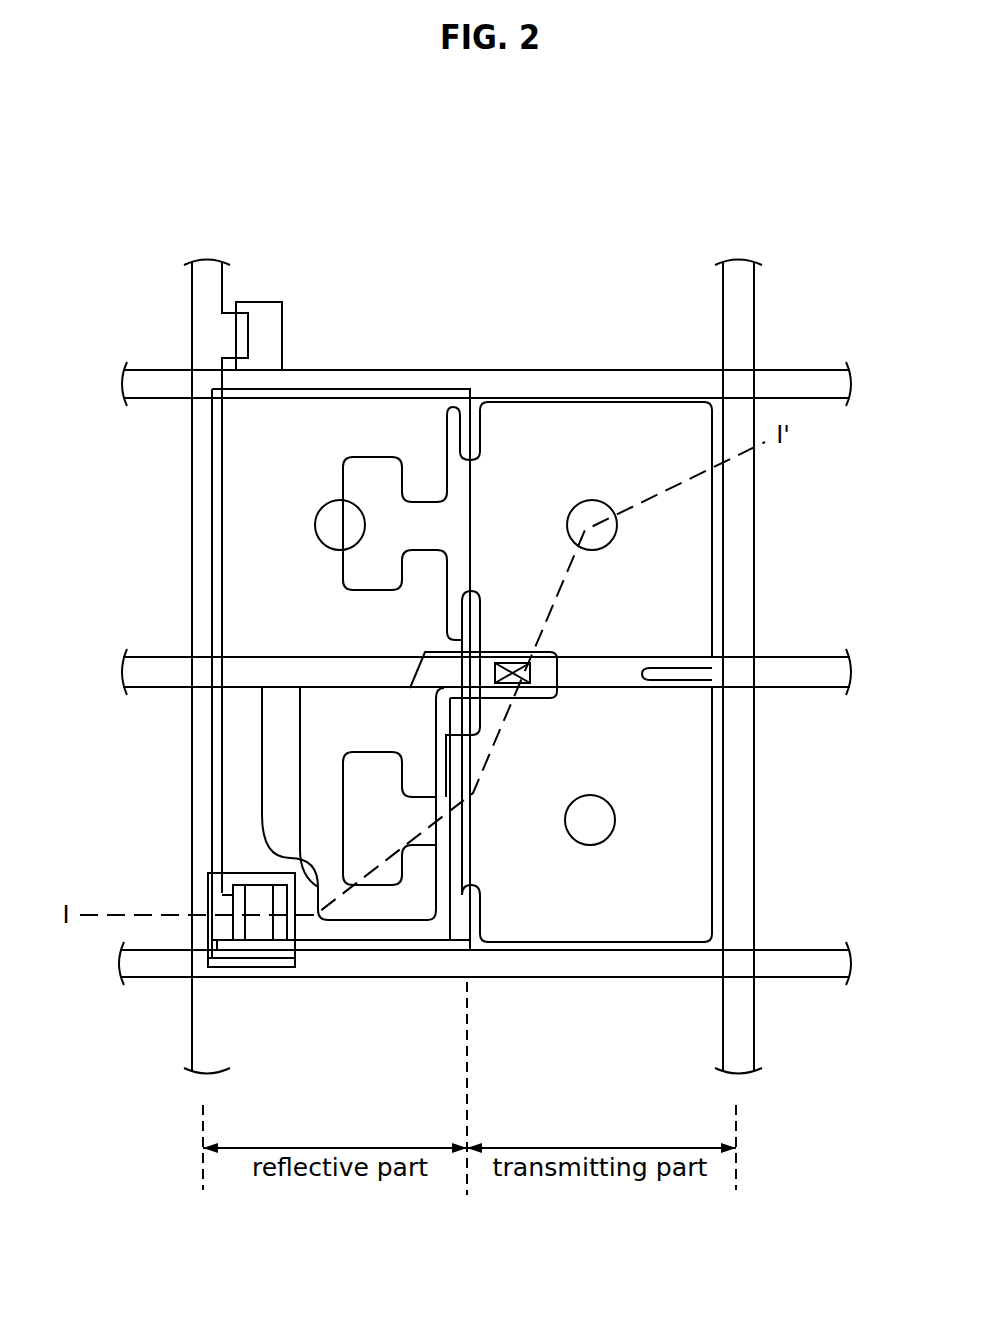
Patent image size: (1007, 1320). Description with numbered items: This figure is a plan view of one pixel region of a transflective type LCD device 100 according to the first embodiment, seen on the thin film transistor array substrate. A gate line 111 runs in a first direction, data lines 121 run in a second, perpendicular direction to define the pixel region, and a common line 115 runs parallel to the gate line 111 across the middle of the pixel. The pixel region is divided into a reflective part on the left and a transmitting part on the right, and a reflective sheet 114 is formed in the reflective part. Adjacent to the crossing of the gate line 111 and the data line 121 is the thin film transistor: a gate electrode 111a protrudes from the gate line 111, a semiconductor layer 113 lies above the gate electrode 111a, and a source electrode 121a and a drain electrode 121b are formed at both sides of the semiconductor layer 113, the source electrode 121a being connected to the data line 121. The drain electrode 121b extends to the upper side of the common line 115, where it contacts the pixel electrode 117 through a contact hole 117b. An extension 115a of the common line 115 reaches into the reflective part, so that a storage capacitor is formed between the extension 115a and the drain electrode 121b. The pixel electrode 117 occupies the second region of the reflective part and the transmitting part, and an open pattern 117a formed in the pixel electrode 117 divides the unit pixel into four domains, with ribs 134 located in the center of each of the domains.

The transflective type LCD device 100 is at (470, 188).
The gate line 111 is at (589, 978).
The gate electrode 111a is at (255, 883).
The semiconductor layer 113 is at (208, 891).
The reflective sheet 114 is at (358, 397).
The common line 115 is at (801, 666).
The extension 115a is at (262, 743).
The pixel electrode 117 is at (712, 830).
The open pattern 117a is at (491, 438).
The contact hole 117b is at (513, 662).
The data line 121 is at (204, 578).
The source electrode 121a is at (238, 942).
The drain electrode 121b is at (282, 942).
The rib 134 is at (594, 512).